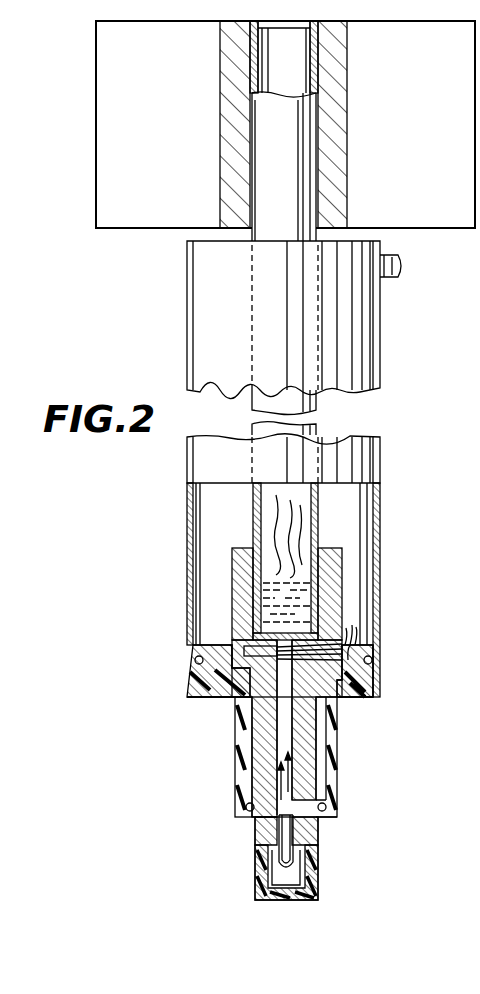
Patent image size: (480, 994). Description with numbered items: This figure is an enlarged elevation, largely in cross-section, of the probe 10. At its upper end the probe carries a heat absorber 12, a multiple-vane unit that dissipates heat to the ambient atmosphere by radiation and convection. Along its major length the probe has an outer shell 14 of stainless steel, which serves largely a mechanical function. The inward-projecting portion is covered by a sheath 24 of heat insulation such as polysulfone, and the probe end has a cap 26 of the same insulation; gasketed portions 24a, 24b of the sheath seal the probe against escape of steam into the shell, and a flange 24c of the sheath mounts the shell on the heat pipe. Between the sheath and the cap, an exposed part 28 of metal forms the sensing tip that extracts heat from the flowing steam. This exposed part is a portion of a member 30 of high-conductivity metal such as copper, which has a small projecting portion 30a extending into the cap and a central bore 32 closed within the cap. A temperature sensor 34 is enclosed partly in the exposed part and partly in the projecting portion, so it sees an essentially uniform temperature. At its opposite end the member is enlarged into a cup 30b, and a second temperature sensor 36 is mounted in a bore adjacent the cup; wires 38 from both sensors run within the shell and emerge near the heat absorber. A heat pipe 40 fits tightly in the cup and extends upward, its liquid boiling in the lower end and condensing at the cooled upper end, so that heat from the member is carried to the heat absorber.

The probe 10 is at (397, 470).
The heat absorber 12 is at (96, 50).
The outer shell 14 is at (380, 540).
The sheath 24 is at (337, 745).
The gasketed portion of sheath 24a is at (320, 825).
The gasketed portion of sheath 24b is at (378, 664).
The flange 24c is at (363, 697).
The cap 26 is at (258, 893).
The exposed part 28 is at (318, 835).
The member 30 is at (262, 773).
The projecting portion 30a is at (300, 878).
The cup 30b is at (240, 560).
The central bore 32 is at (286, 727).
The temperature sensor 34 is at (283, 840).
The second temperature sensor 36 is at (245, 650).
The wires 38 is at (405, 263).
The heat pipe 40 is at (325, 502).